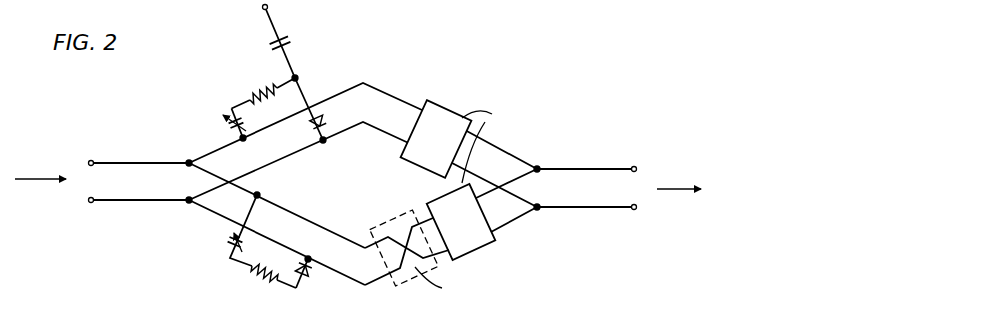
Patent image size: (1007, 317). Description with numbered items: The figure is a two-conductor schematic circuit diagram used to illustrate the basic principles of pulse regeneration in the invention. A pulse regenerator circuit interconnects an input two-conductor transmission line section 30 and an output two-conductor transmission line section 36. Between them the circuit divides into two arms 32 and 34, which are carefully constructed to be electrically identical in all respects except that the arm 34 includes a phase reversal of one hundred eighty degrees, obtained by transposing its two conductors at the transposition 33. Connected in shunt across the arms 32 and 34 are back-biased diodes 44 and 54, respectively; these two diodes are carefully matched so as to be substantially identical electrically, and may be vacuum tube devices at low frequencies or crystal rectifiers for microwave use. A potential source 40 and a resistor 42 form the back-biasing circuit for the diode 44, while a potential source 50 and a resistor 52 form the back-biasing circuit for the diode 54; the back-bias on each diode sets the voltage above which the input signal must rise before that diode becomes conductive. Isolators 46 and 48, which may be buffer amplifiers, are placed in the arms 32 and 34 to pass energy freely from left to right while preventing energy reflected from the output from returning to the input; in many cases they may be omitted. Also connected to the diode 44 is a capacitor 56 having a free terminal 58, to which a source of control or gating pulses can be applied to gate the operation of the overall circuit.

The input two-conductor transmission line section 30 is at (118, 144).
The arm 32 is at (372, 59).
The transposition 33 is at (397, 222).
The arm 34 is at (372, 314).
The output two-conductor transmission line section 36 is at (625, 155).
The potential source 40 is at (228, 124).
The resistor 42 is at (268, 86).
The back-biased diode 44 is at (326, 118).
The isolator 46 is at (440, 105).
The isolator 48 is at (491, 245).
The potential source 50 is at (228, 240).
The resistor 52 is at (255, 279).
The back-biased diode 54 is at (307, 258).
The capacitor 56 is at (271, 46).
The free terminal 58 is at (262, 7).